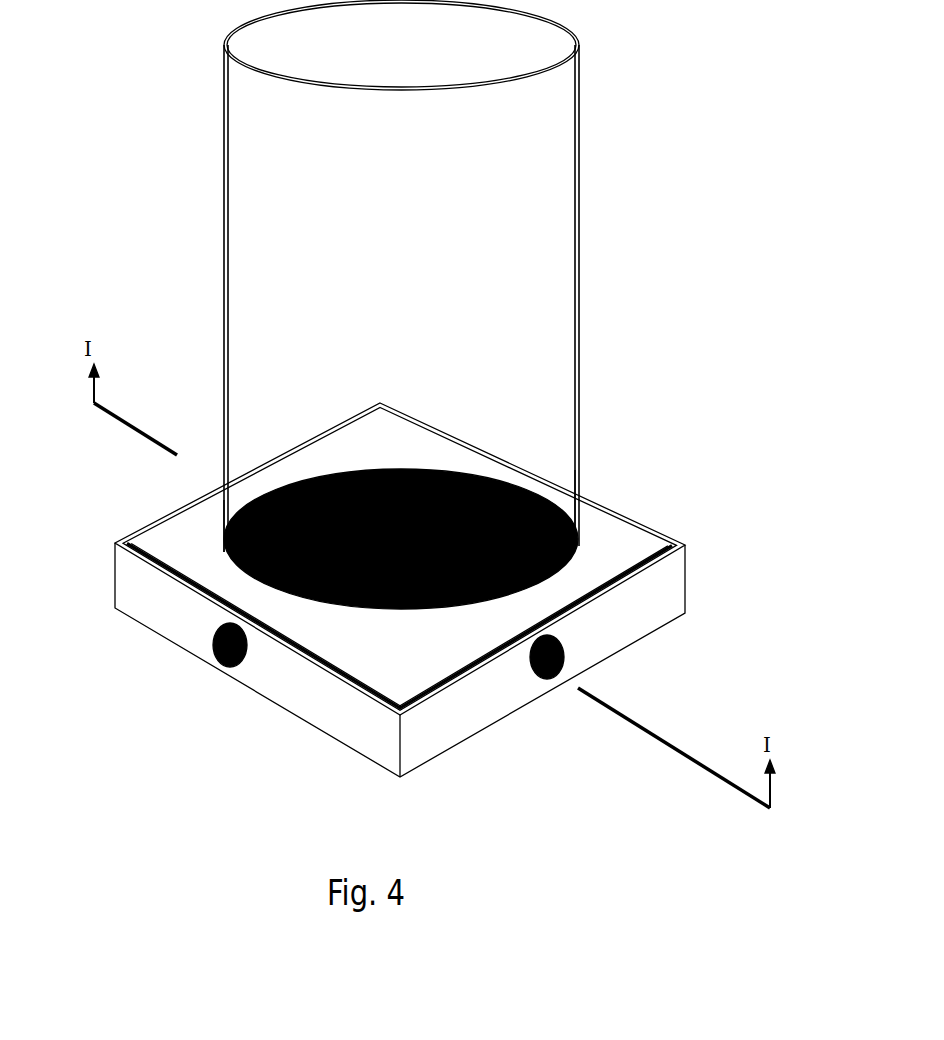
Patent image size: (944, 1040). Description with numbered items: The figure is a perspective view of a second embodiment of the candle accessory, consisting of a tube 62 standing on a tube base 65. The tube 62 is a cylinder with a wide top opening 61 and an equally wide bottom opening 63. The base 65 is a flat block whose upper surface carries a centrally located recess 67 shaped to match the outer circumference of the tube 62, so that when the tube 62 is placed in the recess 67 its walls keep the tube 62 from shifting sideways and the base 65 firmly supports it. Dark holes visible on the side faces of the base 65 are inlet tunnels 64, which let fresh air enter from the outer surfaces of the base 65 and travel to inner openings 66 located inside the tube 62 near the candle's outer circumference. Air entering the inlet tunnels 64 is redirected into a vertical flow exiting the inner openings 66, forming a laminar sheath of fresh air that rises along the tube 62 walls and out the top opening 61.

The top opening 61 is at (581, 33).
The tube 62 is at (581, 236).
The bottom opening 63 is at (581, 541).
The inlet tunnels 64 is at (566, 666).
The tube base 65 is at (688, 580).
The inner openings 66 is at (430, 470).
The recess 67 is at (235, 515).